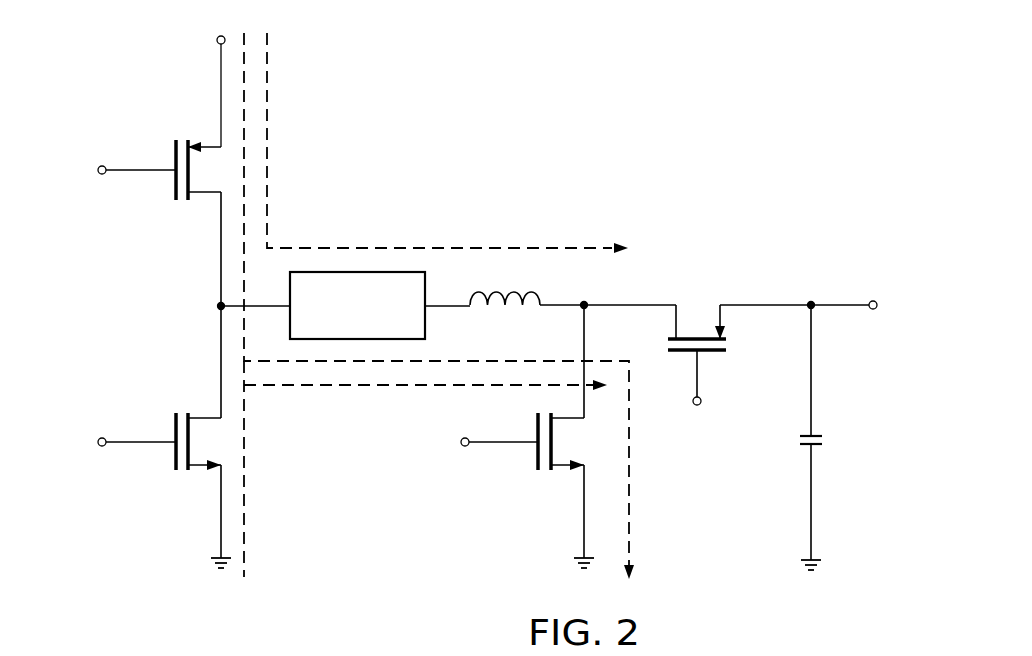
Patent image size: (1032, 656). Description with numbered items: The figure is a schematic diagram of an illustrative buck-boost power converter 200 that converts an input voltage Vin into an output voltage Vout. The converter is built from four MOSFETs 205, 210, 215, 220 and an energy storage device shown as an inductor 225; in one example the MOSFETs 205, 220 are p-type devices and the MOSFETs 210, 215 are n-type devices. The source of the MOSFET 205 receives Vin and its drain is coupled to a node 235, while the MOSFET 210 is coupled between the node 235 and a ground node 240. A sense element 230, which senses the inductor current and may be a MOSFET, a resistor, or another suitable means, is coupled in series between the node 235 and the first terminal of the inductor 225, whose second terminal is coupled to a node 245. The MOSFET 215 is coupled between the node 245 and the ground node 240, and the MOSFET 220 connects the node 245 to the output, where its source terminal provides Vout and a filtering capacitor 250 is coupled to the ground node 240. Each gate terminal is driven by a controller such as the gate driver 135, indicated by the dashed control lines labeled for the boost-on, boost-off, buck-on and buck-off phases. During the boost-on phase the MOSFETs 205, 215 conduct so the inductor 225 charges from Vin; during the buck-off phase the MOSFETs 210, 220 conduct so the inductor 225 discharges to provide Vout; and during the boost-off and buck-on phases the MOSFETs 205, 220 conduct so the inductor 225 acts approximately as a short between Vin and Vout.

The buck-boost power converter 200 is at (603, 70).
The gate driver 135 is at (374, 306).
The MOSFET 205 is at (176, 158).
The MOSFET 210 is at (176, 456).
The MOSFET 215 is at (538, 456).
The MOSFET 220 is at (712, 352).
The inductor 225 is at (537, 290).
The sense element 230 is at (425, 318).
The node 235 is at (217, 307).
The ground node 240 is at (214, 569).
The node 245 is at (587, 308).
The capacitor 250 is at (822, 442).